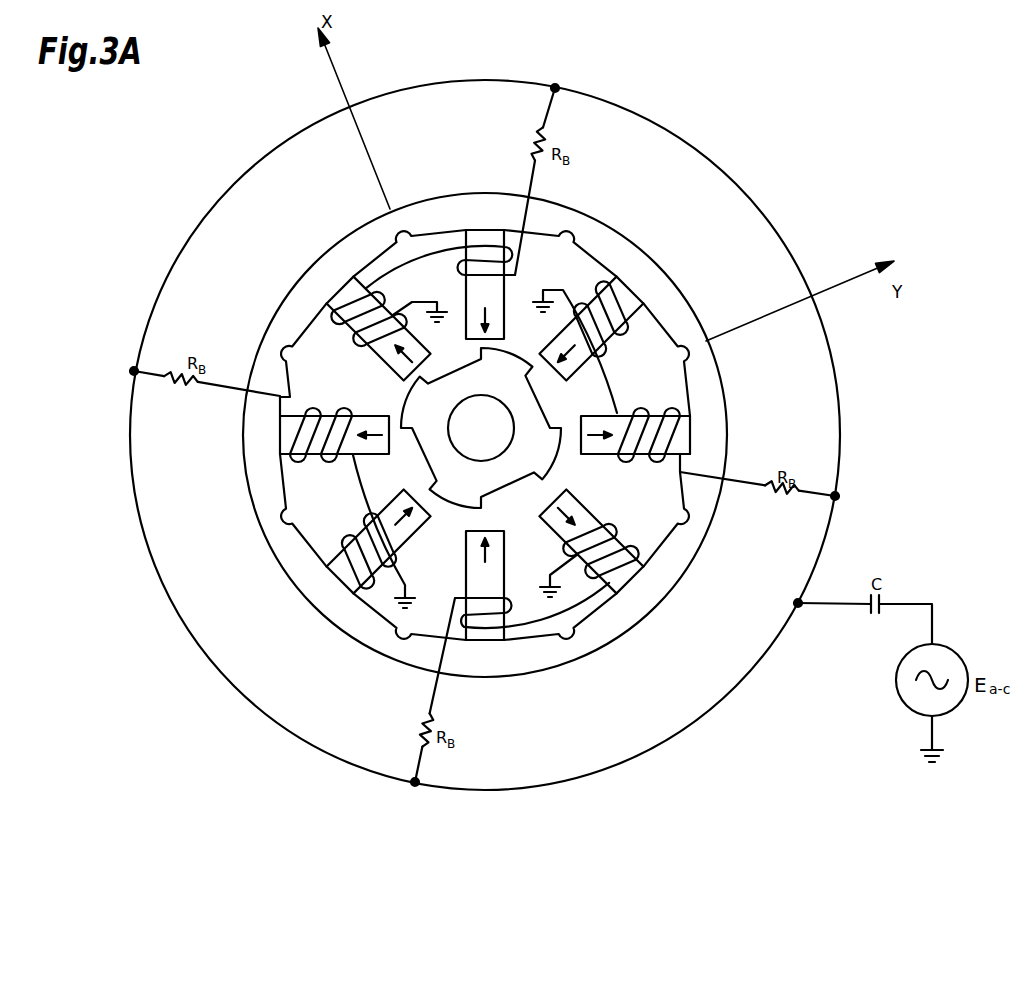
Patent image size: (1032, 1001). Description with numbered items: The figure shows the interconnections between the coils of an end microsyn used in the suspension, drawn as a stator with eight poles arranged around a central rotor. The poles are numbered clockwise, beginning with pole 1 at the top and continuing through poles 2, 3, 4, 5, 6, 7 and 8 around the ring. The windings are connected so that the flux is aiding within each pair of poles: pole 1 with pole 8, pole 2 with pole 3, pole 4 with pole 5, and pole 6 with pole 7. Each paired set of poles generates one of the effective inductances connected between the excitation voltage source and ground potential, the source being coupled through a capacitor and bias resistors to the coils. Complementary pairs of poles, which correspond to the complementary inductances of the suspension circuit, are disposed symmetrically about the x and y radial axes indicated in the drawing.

The pole 1 is at (440, 270).
The pole 2 is at (592, 342).
The pole 3 is at (642, 435).
The pole 4 is at (591, 541).
The pole 5 is at (532, 594).
The pole 6 is at (378, 531).
The pole 7 is at (327, 435).
The pole 8 is at (378, 328).